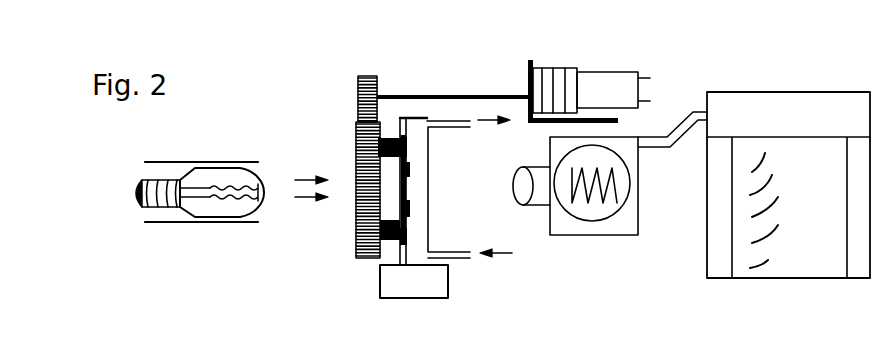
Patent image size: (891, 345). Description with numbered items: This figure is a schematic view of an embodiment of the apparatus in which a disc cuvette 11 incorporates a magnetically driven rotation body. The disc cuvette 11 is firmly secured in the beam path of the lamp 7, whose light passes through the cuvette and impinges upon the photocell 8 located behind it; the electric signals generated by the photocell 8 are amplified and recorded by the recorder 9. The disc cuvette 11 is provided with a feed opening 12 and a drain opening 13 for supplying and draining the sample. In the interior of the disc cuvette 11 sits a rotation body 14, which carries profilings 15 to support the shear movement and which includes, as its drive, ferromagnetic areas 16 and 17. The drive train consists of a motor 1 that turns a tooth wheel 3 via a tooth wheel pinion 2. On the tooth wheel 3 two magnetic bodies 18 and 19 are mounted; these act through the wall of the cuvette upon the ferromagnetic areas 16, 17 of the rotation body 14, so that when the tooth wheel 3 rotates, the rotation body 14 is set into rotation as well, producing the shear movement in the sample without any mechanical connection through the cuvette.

The motor 1 is at (598, 82).
The tooth wheel pinion 2 is at (358, 95).
The tooth wheel 3 is at (357, 158).
The lamp 7 is at (258, 210).
The photocell 8 is at (607, 227).
The recorder 9 is at (777, 98).
The disc cuvette 11 is at (410, 118).
The feed opening 12 is at (470, 257).
The drain opening 13 is at (468, 128).
The rotation body 14 is at (407, 197).
The profilings 15 is at (410, 168).
The ferromagnetic area 16 is at (407, 145).
The ferromagnetic area 17 is at (407, 235).
The magnetic body 18 is at (384, 137).
The magnetic body 19 is at (390, 242).